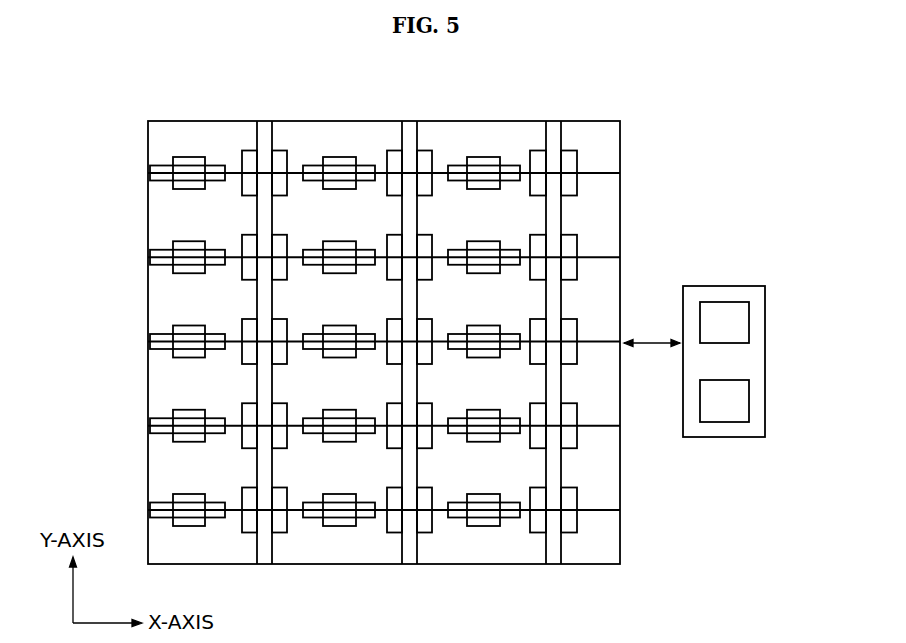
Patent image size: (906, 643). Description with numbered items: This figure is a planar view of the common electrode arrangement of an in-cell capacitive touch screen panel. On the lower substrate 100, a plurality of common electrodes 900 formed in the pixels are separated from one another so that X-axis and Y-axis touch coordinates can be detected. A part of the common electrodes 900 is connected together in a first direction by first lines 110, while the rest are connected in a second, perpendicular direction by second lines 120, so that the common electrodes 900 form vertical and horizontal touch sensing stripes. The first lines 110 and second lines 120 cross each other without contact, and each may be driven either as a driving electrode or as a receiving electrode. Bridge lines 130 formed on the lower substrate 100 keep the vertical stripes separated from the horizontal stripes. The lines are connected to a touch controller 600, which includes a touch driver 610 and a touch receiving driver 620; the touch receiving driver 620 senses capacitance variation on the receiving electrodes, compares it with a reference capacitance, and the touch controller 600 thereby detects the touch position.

The lower substrate 100 is at (177, 121).
The first lines 110 is at (265, 119).
The second lines 120 is at (150, 170).
The bridge lines 130 is at (381, 170).
The common electrodes 900 is at (197, 157).
The touch controller 600 is at (723, 286).
The touch driver 610 is at (749, 321).
The touch receiving driver 620 is at (749, 402).